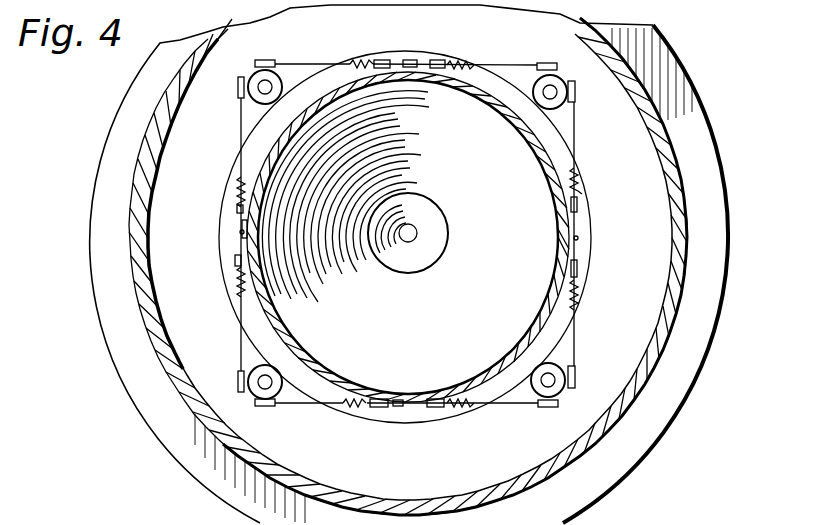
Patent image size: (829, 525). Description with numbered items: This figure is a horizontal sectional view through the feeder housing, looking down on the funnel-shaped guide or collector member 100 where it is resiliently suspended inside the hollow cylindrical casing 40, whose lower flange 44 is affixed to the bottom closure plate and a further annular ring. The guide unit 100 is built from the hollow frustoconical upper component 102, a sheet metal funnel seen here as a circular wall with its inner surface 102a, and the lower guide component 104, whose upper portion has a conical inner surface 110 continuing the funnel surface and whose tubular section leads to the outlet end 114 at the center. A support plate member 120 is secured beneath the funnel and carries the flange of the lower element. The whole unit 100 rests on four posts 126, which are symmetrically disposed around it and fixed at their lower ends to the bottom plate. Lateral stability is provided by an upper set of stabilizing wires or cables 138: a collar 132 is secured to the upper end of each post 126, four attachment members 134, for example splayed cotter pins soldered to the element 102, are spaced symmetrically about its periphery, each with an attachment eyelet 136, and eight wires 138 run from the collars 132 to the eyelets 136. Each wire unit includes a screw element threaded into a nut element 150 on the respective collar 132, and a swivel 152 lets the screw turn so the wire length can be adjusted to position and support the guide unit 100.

The hollow cylindrical casing 40 is at (690, 197).
The lower flange 44 is at (713, 222).
The funnel-shaped guide or collector member 100 is at (558, 158).
The hollow frustoconical upper component 102 is at (576, 181).
The inner surface of the element 102 102a is at (512, 322).
The lower guide component 104 is at (448, 233).
The conical inner surface 110 is at (437, 210).
The outlet end 114 is at (418, 242).
The support plate member 120 is at (230, 267).
The post 126 is at (262, 60).
The collar 132 is at (571, 104).
The attachment member 134 is at (432, 60).
The attachment eyelet 136 is at (386, 60).
The stabilizing wire or cable 138 is at (340, 62).
The nut element 150 is at (253, 75).
The swivel 152 is at (578, 268).